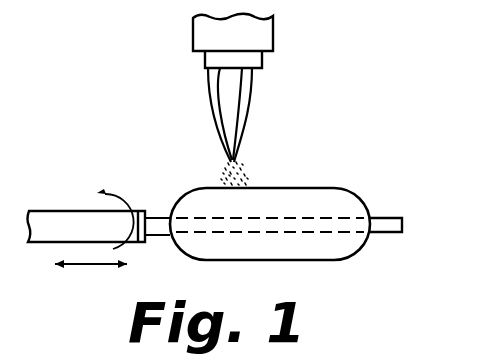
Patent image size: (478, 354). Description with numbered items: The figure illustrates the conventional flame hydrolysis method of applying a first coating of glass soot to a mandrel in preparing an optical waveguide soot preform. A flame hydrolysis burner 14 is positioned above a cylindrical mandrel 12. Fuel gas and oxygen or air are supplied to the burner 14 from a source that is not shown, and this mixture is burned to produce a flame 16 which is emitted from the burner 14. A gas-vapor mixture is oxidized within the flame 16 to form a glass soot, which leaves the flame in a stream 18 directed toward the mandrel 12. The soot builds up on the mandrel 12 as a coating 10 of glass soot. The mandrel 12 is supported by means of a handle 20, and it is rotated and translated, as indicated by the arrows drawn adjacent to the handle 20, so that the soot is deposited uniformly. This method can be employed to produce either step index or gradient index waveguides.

The coating 10 is at (340, 187).
The cylindrical mandrel 12 is at (386, 217).
The flame hydrolysis burner 14 is at (263, 32).
The flame 16 is at (247, 106).
The stream 18 is at (239, 178).
The handle 20 is at (66, 210).